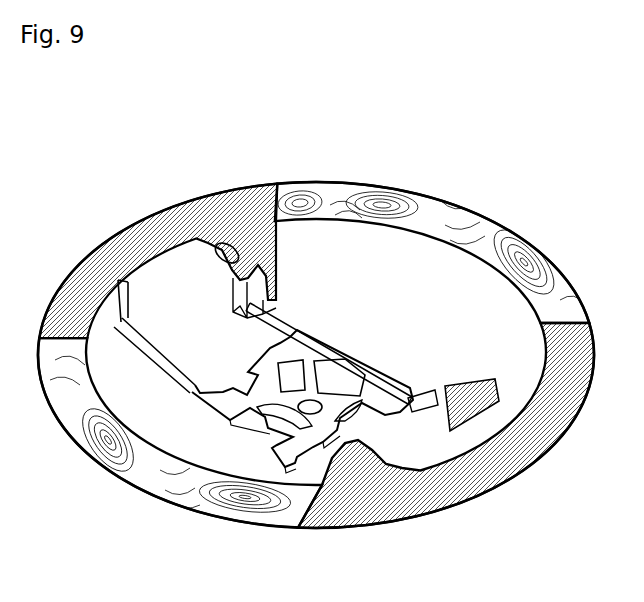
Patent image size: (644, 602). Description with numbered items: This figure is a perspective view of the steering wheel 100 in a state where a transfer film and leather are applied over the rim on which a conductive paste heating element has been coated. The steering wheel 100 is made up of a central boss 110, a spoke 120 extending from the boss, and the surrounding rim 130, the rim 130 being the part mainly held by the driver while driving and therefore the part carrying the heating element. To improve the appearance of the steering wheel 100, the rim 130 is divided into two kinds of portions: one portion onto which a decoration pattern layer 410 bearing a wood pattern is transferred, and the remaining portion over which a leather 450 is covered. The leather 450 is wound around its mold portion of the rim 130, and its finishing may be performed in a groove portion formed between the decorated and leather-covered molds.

The steering wheel 100 is at (524, 180).
The boss 110 is at (332, 400).
The spoke 120 is at (249, 285).
The rim 130 is at (407, 187).
The decoration pattern layer 410 is at (128, 471).
The leather 450 is at (379, 501).